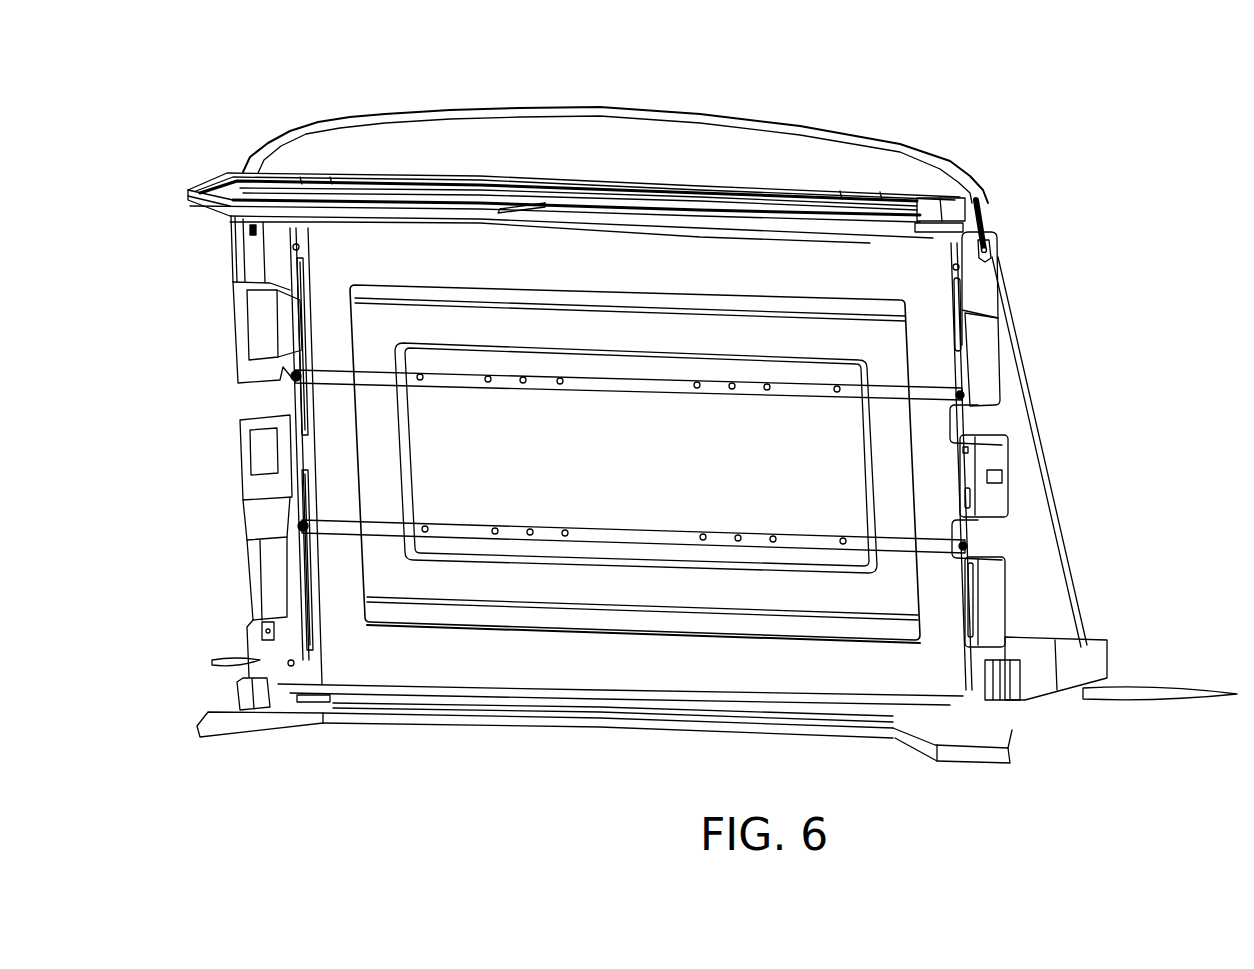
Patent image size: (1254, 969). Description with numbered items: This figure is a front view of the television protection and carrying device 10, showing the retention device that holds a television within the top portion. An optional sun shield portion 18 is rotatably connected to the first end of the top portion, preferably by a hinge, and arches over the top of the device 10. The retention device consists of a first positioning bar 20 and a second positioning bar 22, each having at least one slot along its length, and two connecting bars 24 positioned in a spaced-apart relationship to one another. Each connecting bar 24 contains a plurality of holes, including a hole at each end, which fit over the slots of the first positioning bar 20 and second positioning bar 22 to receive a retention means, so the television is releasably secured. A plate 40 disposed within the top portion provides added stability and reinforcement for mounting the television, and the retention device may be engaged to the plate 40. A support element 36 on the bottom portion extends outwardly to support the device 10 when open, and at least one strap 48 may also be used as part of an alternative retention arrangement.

The television protection and carrying device 10 is at (838, 80).
The sun shield portion 18 is at (612, 205).
The first positioning bar 20 is at (997, 313).
The second positioning bar 22 is at (298, 290).
The connecting bar 24 is at (322, 376).
The support element 36 is at (242, 665).
The plate 40 is at (497, 663).
The strap 48 is at (948, 157).